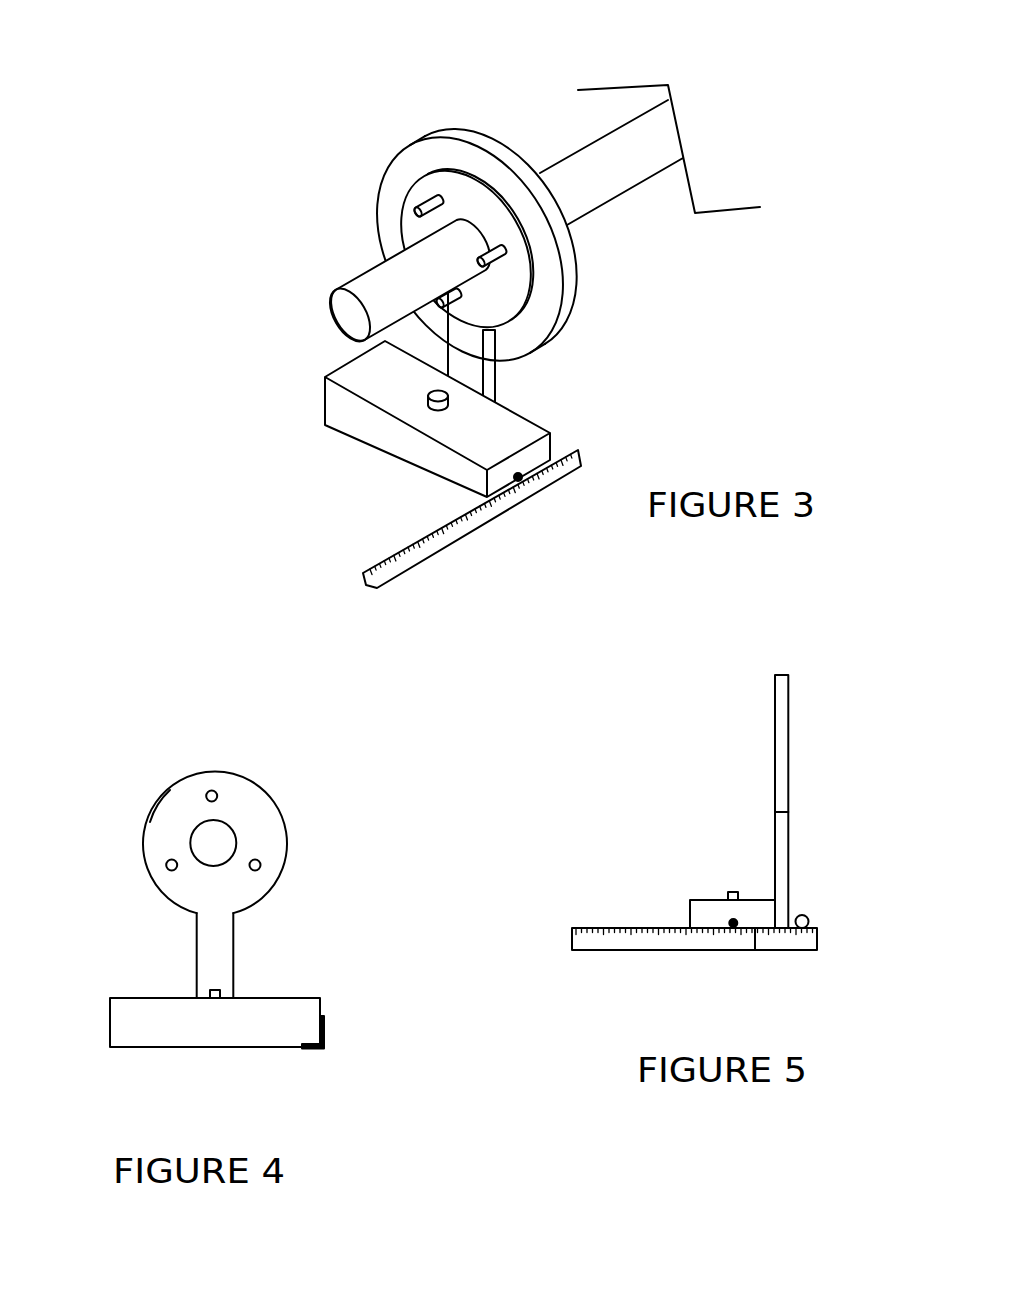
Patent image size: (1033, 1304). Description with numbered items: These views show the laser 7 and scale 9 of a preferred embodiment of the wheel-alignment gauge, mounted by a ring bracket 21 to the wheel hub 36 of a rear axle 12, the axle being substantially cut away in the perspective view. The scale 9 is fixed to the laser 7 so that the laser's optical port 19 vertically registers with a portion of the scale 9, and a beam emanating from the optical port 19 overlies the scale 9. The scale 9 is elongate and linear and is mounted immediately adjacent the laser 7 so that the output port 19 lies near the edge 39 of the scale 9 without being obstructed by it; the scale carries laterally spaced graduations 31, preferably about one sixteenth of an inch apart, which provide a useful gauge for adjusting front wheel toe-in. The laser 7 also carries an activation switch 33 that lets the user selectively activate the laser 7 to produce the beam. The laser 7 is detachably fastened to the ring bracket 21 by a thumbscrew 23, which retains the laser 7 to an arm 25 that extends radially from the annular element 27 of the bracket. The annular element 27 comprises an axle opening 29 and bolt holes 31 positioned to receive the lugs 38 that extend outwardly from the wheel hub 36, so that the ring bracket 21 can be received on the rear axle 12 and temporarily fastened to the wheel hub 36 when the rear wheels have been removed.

In FIG. 3, the laser 7 is at (409, 422).
In FIG. 4, the laser 7 is at (219, 1055).
In FIG. 5, the laser 7 is at (706, 882).
In FIG. 3, the scale 9 is at (442, 543).
In FIG. 4, the scale 9 is at (349, 1066).
In FIG. 5, the scale 9 is at (677, 970).
In FIG. 3, the rear axle 12 is at (650, 180).
In FIG. 3, the optical port 19 is at (592, 427).
In FIG. 4, the optical port 19 is at (365, 1014).
In FIG. 5, the optical port 19 is at (678, 859).
In FIG. 3, the ring bracket 21 is at (455, 201).
In FIG. 4, the ring bracket 21 is at (259, 830).
In FIG. 5, the ring bracket 21 is at (829, 738).
In FIG. 5, the thumbscrew 23 is at (849, 906).
In FIG. 4, the arm 25 is at (281, 951).
In FIG. 5, the arm 25 is at (831, 852).
In FIG. 4, the annular element 27 is at (111, 803).
In FIG. 4, the axle opening 29 is at (159, 797).
In FIG. 5, the axle opening 29 is at (522, 923).
In FIG. 4, the bolt holes 31 is at (286, 788).
In FIG. 5, the bolt holes 31 is at (797, 974).
In FIG. 3, the activation switch 33 is at (339, 373).
In FIG. 4, the activation switch 33 is at (156, 964).
In FIG. 5, the activation switch 33 is at (672, 822).
In FIG. 3, the wheel hub 36 is at (470, 214).
In FIG. 3, the lugs 38 is at (375, 180).
In FIG. 3, the edge 39 is at (430, 514).
In FIG. 5, the edge 39 is at (670, 896).